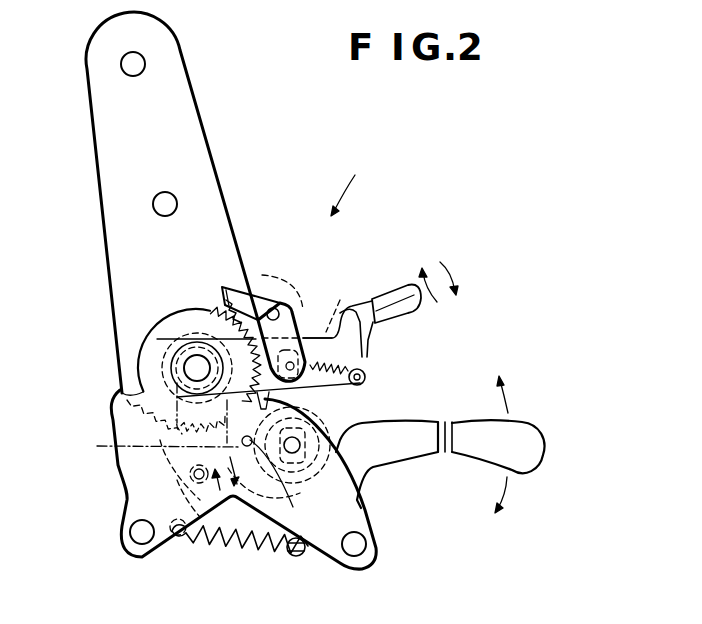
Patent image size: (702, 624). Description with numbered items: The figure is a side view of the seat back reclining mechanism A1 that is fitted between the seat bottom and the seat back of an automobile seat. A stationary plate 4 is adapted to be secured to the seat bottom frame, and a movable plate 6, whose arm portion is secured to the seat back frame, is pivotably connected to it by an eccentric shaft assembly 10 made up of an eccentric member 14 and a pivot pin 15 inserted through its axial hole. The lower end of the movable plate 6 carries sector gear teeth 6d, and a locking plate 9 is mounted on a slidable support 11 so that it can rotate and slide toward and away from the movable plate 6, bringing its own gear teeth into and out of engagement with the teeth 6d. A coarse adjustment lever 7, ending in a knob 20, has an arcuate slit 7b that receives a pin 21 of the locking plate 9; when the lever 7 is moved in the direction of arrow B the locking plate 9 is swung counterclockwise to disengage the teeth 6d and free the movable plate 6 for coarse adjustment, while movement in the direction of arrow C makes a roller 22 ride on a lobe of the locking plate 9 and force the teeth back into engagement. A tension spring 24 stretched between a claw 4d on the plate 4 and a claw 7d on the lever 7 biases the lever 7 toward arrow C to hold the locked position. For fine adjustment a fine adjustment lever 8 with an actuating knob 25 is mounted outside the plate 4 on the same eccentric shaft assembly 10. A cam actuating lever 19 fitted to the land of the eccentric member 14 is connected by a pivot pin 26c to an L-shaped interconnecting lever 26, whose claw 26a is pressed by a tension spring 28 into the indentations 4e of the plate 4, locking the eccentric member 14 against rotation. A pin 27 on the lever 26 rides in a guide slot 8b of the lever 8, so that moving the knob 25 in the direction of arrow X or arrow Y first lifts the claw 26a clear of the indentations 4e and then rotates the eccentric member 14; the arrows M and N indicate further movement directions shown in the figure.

The movable plate 6 is at (190, 137).
The stationary plate 4 is at (153, 552).
The sector gear or indentations 4e is at (213, 307).
The claw 4d is at (200, 548).
The eccentric shaft assembly 10 is at (142, 365).
The pivot pin 15 is at (190, 367).
The eccentric member 14 is at (215, 378).
The locking plate 9 is at (177, 447).
The sector gear teeth 6d is at (127, 422).
The arcuate slit 7b is at (158, 447).
The roller 22 is at (187, 480).
The interconnecting lever 26 is at (243, 297).
The claw 26a is at (222, 292).
The pivot pin 26c is at (276, 310).
The cam actuating lever 19 is at (284, 352).
The pin 27 is at (312, 405).
The fine adjustment lever 8 is at (374, 338).
The guide slot 8b is at (342, 305).
The actuating knob 25 is at (403, 307).
The tension spring 28 is at (366, 375).
The coarse adjustment lever 7 is at (454, 452).
The knob 20 is at (522, 430).
The slidable support 11 is at (295, 444).
The pin 21 is at (290, 500).
The tension spring 24 is at (222, 547).
The claw 7d is at (296, 550).
The direction arrow M is at (244, 472).
The direction arrow N is at (206, 486).
The seat back reclining mechanism A1 is at (361, 188).
The arrow X is at (433, 296).
The arrow Y is at (443, 264).
The arrow B is at (497, 382).
The arrow C is at (496, 507).